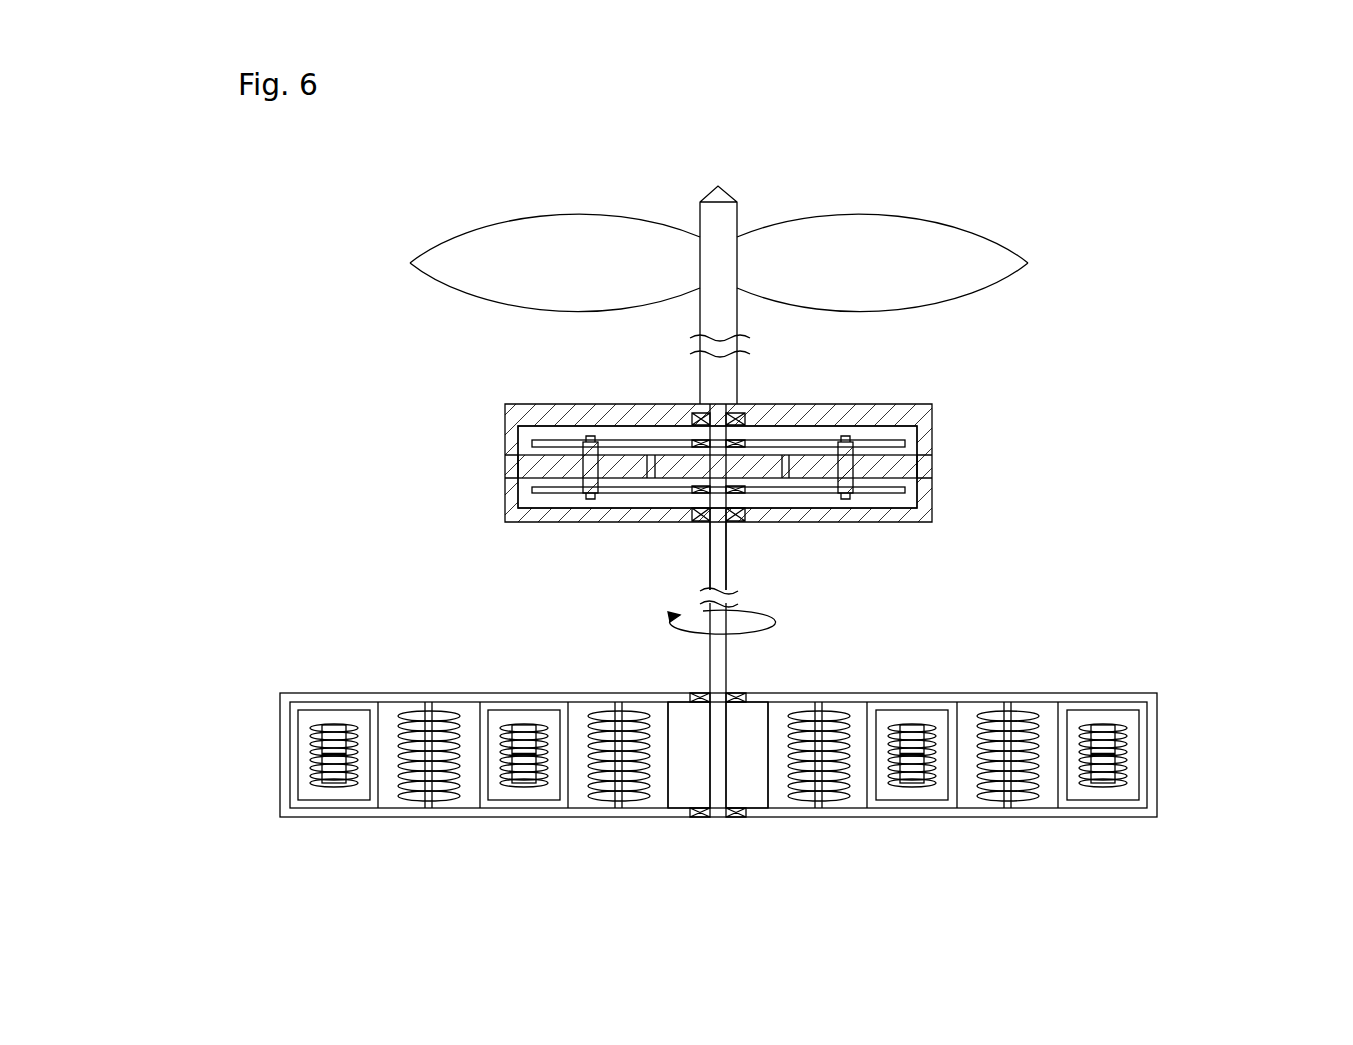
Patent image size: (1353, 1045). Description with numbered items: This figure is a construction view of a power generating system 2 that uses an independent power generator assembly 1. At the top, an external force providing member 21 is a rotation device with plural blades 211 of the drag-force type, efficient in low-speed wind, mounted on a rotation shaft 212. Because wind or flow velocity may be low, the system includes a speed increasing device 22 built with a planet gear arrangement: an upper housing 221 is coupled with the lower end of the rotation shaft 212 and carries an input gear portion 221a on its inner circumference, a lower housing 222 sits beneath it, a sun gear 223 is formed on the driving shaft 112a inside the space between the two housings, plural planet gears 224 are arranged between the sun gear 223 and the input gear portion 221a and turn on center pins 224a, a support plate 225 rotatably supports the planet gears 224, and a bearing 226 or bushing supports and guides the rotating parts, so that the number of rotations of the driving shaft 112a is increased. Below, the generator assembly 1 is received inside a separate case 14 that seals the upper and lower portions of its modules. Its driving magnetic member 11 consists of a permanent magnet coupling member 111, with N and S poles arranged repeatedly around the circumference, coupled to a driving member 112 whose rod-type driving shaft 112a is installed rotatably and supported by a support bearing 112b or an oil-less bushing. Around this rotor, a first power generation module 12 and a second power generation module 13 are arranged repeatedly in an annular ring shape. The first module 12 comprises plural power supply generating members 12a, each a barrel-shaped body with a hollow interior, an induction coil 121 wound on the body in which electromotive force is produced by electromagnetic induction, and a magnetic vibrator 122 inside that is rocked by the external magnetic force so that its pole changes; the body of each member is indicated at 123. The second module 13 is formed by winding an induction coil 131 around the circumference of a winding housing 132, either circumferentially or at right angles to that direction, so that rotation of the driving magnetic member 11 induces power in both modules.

The independent power generator assembly 1 is at (1168, 714).
The driving magnetic member 11 is at (873, 618).
The permanent magnet coupling member 111 is at (757, 708).
The driving member 112 is at (722, 660).
The driving shaft 112a is at (730, 545).
The support bearing 112b is at (737, 818).
The first power generation module 12 is at (452, 550).
The power supply generating member 12a is at (380, 606).
The induction coil 121 is at (325, 703).
The magnetic vibrator 122 is at (343, 703).
The magnet case 123 is at (303, 703).
The second power generation module 13 is at (449, 814).
The induction coil 131 is at (594, 703).
The winding housing 132 is at (615, 703).
The case 14 is at (1073, 695).
The power generating system 2 is at (437, 95).
The external force providing member 21 is at (753, 186).
The blade 211 is at (584, 240).
The rotation shaft 212 is at (728, 313).
The speed increasing device 22 is at (958, 407).
The upper housing 221 is at (505, 425).
The input gear portion 221a is at (525, 470).
The lower housing 222 is at (925, 508).
The sun gear 223 is at (668, 462).
The planet gear 224 is at (930, 458).
The center pin 224a is at (905, 447).
The support plate 225 is at (873, 443).
The bearing 226 is at (698, 518).